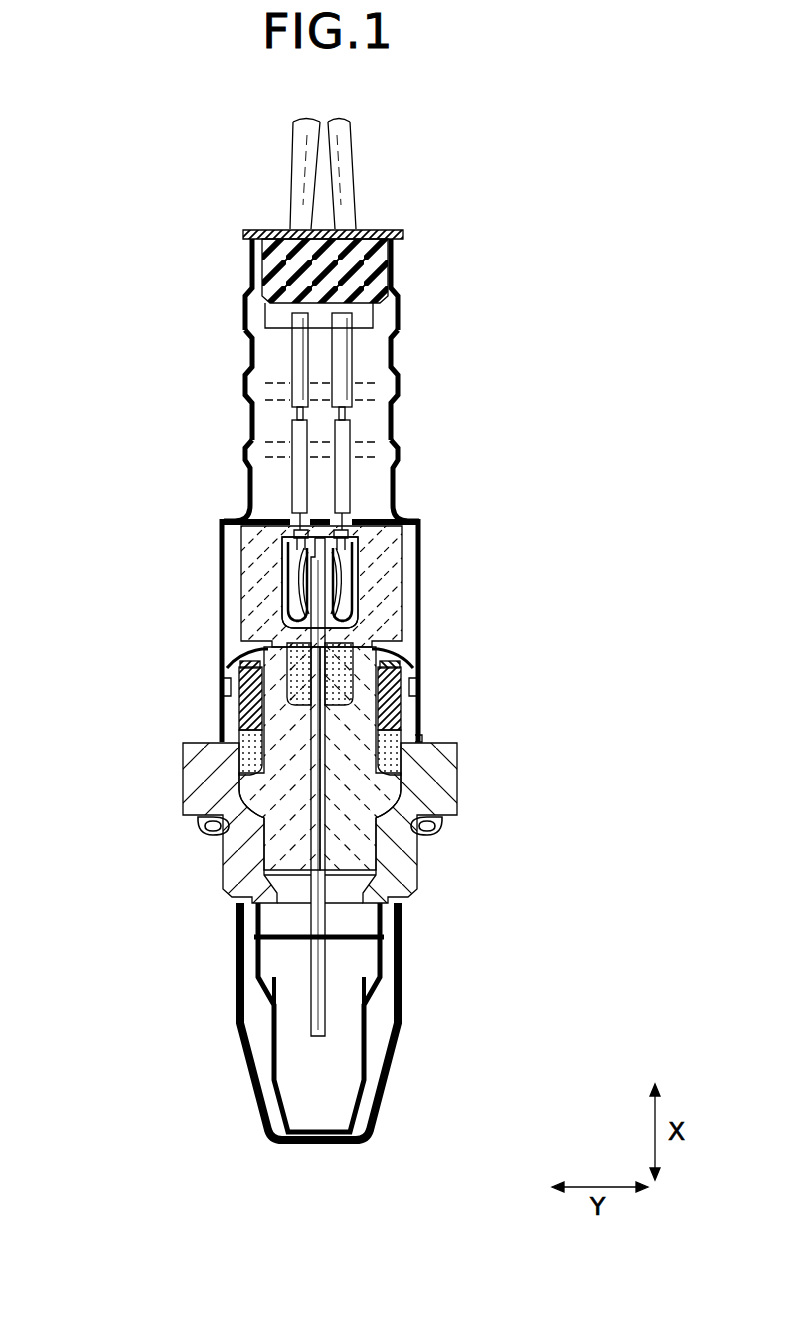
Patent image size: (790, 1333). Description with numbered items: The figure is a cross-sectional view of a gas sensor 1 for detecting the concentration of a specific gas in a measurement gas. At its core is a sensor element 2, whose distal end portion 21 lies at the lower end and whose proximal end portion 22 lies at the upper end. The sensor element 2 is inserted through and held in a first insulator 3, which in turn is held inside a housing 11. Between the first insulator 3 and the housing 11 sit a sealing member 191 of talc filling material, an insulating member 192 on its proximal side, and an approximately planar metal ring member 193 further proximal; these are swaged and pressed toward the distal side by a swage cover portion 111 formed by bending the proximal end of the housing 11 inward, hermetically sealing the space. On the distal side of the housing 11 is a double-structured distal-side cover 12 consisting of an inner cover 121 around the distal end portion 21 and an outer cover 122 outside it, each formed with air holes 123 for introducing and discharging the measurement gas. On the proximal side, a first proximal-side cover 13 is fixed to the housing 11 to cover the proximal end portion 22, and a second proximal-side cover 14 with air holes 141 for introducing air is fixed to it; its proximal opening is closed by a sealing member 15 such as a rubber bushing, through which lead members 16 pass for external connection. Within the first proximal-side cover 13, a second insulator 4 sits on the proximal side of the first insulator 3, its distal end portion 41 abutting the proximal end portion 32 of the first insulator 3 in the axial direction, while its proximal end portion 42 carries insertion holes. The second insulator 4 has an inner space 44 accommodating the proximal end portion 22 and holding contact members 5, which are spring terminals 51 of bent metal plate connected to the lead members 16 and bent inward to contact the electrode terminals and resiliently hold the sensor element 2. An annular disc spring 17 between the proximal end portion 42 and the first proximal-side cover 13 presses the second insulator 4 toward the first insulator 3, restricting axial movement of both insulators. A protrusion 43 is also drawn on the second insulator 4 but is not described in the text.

The gas sensor 1 is at (466, 152).
The sensor element 2 is at (317, 788).
The distal end portion 21 is at (330, 1025).
The proximal end portion 22 is at (327, 596).
The first insulator 3 is at (268, 757).
The proximal end portion 32 is at (230, 657).
The second insulator 4 is at (388, 588).
The distal end portion 41 is at (263, 627).
The proximal end portion 42 is at (244, 523).
The engaging protrusion 43 is at (407, 688).
The inner space 44 is at (292, 608).
The contact members 5 is at (358, 553).
The spring terminals 51 is at (283, 588).
The housing 11 is at (396, 856).
The swage cover portion 111 is at (420, 667).
The distal-side cover 12 is at (233, 917).
The inner cover 121 is at (355, 1100).
The outer cover 122 is at (250, 1083).
The air holes 123 is at (262, 996).
The first proximal-side cover 13 is at (397, 480).
The second proximal-side cover 14 is at (247, 388).
The air holes 141 is at (246, 312).
The sealing member 15 is at (392, 254).
The lead members 16 is at (345, 352).
The disc spring 17 is at (250, 497).
The sealing member 191 is at (394, 786).
The insulating member 192 is at (420, 727).
The metal ring member 193 is at (228, 688).